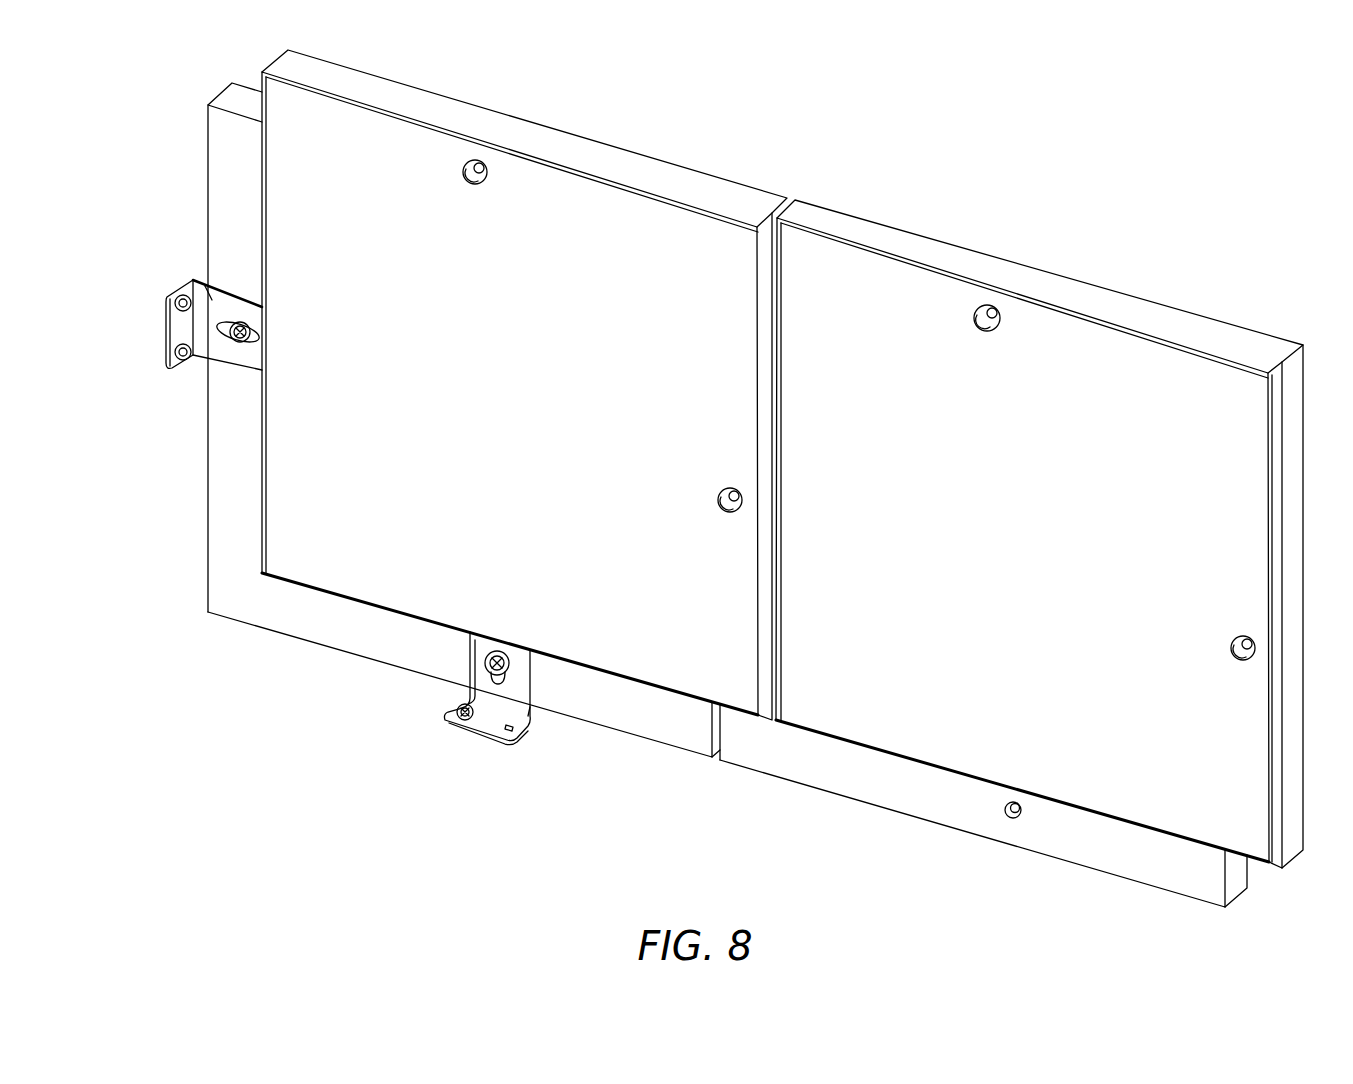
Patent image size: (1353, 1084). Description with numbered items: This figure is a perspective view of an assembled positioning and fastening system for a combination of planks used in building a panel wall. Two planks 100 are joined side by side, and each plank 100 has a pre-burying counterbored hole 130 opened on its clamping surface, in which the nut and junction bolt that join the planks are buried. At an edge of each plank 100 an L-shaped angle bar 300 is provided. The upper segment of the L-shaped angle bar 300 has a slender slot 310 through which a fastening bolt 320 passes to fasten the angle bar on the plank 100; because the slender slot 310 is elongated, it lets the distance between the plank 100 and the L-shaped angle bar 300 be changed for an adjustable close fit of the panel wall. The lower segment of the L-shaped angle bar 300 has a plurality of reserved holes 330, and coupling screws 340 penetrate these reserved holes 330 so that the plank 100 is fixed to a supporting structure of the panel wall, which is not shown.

The plank 100 is at (713, 187).
The pre-burying counterbored hole 130 is at (463, 170).
The L-shaped angle bar 300 is at (193, 282).
The slender slot 310 is at (518, 725).
The fastening bolt 320 is at (510, 663).
The reserved hole 330 is at (520, 718).
The coupling screw 340 is at (447, 715).